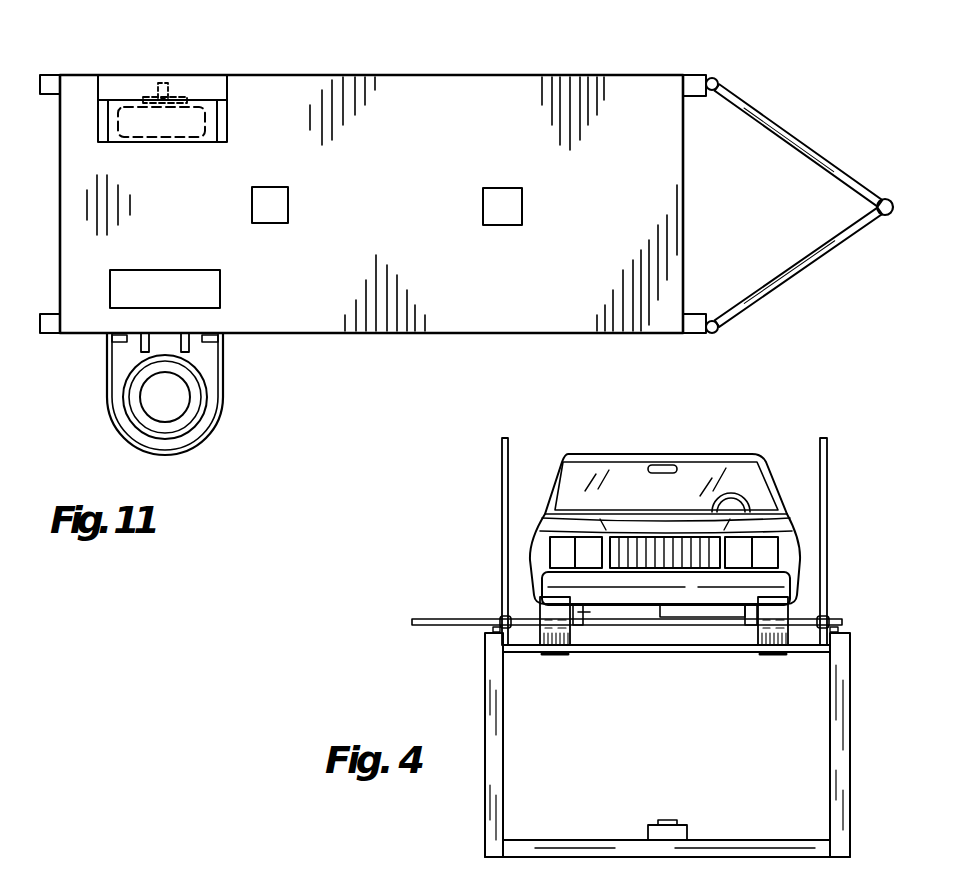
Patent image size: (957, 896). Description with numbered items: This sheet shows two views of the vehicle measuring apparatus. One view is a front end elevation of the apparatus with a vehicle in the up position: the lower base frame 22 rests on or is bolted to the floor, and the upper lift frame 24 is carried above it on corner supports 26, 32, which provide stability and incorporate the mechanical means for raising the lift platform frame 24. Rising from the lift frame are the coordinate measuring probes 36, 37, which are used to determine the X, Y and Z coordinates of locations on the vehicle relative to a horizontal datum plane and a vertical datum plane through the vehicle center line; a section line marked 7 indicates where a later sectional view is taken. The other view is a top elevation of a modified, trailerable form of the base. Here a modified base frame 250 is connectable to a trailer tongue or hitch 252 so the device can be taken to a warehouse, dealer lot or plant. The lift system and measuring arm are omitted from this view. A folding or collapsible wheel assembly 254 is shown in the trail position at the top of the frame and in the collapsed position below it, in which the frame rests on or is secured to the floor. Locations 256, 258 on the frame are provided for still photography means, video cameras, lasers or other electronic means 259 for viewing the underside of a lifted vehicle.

In FIG. 11, the modified base frame 250 is at (574, 304).
In FIG. 11, the trailer tongue or hitch 252 is at (838, 209).
In FIG. 11, the folding or collapsible wheel assembly 254 is at (180, 63).
In FIG. 11, the location 256 is at (289, 207).
In FIG. 11, the location 258 is at (523, 207).
In FIG. 4, the section line for FIG. 7 is at (862, 452).
In FIG. 4, the lower base frame 22 is at (742, 840).
In FIG. 4, the upper lift frame 24 is at (627, 653).
In FIG. 4, the corner support 26 is at (503, 750).
In FIG. 4, the corner support 32 is at (830, 752).
In FIG. 4, the coordinate measuring assembly 36 is at (521, 492).
In FIG. 4, the coordinate measuring probe 37 is at (866, 494).
In FIG. 4, the electronic means 259 is at (655, 826).